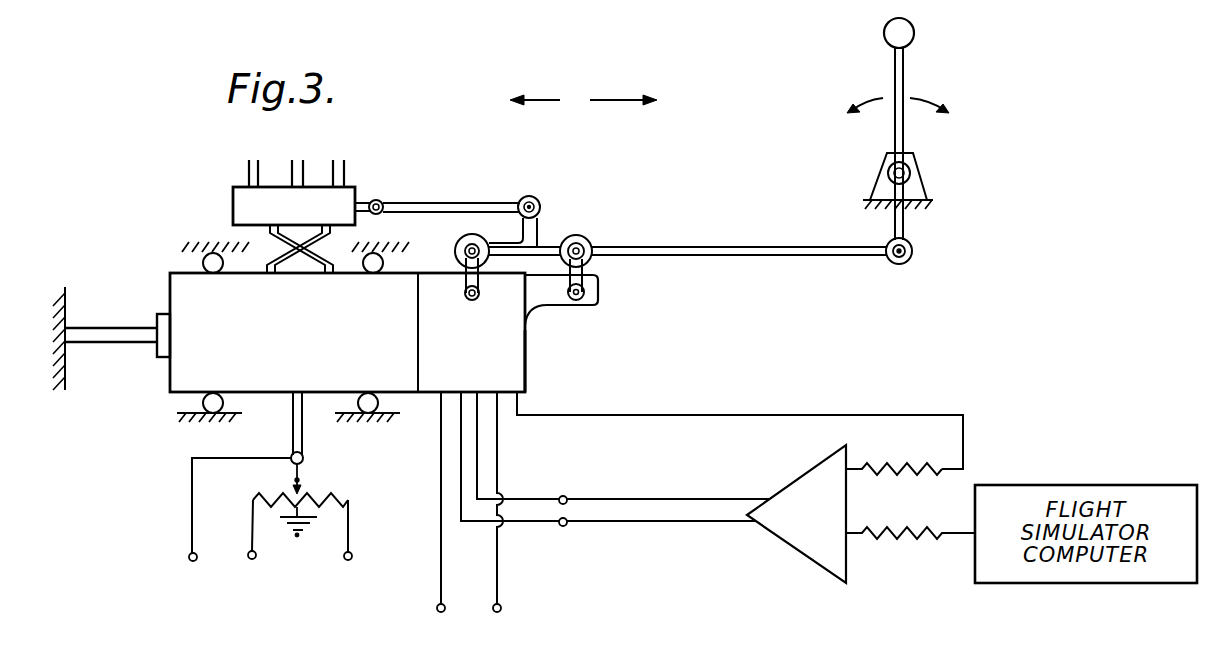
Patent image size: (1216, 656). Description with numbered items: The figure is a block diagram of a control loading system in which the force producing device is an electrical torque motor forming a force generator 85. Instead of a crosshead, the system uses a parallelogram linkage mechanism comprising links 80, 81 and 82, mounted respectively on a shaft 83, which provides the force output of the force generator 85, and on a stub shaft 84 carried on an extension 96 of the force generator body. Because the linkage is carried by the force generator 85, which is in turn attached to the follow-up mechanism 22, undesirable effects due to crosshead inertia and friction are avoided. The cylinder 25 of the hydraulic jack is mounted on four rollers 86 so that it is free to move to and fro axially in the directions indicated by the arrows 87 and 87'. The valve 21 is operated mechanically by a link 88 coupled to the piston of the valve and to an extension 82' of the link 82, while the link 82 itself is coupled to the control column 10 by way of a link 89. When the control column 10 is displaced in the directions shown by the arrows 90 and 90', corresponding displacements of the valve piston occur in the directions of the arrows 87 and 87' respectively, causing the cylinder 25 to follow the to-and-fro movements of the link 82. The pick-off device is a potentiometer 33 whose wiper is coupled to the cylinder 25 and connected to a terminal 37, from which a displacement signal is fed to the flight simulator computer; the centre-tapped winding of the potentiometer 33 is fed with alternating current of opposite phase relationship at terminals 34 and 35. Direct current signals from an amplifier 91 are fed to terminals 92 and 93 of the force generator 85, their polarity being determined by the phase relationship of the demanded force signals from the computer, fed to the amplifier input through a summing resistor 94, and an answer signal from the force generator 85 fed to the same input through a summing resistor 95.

The control column 10 is at (905, 130).
The valve 21 is at (248, 202).
The follow-up mechanism 22 is at (128, 382).
The cylinder 25 is at (347, 332).
The potentiometer 33 is at (350, 500).
The terminal 34 is at (248, 557).
The terminal 35 is at (344, 558).
The terminal 37 is at (189, 558).
The link 80 is at (483, 242).
The link 81 is at (588, 270).
The link 82 is at (541, 233).
The extension of link 82' is at (541, 206).
The shaft 83 is at (480, 294).
The stub shaft 84 is at (593, 308).
The force generator 85 is at (513, 356).
The rollers 86 is at (187, 257).
The arrow 87 is at (535, 83).
The arrow 87' is at (623, 83).
The link 88 is at (468, 203).
The link 89 is at (750, 247).
The arrow 90 is at (934, 91).
The arrow 90' is at (862, 91).
The amplifier 91 is at (826, 524).
The terminal 92 is at (565, 496).
The terminal 93 is at (565, 527).
The summing resistor 94 is at (904, 532).
The summing resistor 95 is at (902, 466).
The extension 96 is at (547, 300).